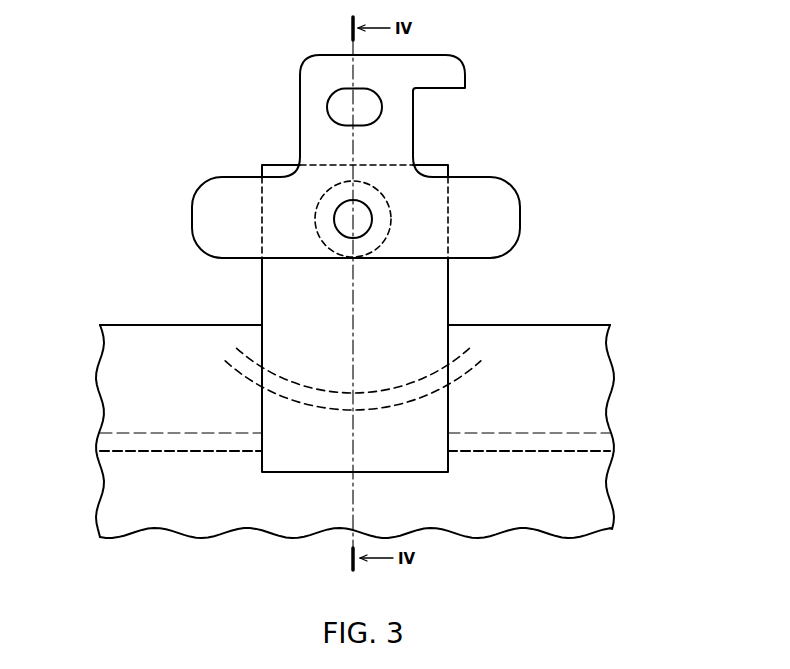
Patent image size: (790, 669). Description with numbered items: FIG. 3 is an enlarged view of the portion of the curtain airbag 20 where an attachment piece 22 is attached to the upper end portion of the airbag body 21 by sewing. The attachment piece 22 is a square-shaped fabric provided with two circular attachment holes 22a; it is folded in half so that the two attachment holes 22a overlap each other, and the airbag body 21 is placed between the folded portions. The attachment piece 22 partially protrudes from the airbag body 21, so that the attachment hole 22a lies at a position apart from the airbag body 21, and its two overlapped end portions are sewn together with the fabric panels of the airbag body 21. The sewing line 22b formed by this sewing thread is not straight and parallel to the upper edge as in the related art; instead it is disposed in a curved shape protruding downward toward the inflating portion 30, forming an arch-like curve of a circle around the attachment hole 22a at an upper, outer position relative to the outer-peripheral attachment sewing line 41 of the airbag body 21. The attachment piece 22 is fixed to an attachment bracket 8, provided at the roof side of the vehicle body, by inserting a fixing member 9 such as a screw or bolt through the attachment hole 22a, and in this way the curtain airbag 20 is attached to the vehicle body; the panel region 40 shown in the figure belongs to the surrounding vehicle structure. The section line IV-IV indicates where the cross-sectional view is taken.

The attachment bracket 8 is at (337, 55).
The fixing member 9 is at (381, 191).
The curtain airbag 20 is at (598, 237).
The airbag body 21 is at (315, 538).
The attachment piece 22 is at (262, 292).
The attachment hole 22a is at (362, 238).
The sewing line 22b is at (465, 372).
The inflating portion 30 is at (513, 512).
The panel 40 is at (137, 375).
The outer-peripheral attachment sewing line 41 is at (550, 453).